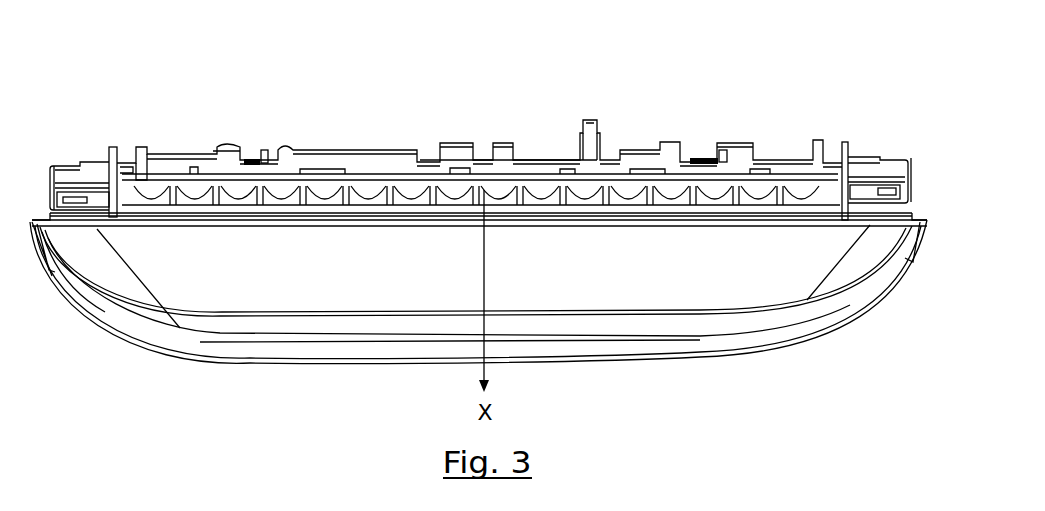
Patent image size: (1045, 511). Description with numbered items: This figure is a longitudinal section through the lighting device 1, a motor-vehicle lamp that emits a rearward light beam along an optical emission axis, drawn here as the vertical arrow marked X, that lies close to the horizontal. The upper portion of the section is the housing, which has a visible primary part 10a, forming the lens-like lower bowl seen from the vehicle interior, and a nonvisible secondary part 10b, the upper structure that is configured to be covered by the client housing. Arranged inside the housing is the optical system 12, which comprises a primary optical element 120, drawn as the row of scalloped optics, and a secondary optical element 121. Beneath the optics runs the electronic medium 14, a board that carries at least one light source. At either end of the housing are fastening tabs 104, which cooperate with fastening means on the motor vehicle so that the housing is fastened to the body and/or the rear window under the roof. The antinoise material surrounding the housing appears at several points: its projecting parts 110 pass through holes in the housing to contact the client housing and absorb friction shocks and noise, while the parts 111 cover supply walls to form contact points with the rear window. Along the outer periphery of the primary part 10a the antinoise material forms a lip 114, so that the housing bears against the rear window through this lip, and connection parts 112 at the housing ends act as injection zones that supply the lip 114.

The lighting device 1 is at (196, 110).
The primary part 10a is at (780, 287).
The secondary part 10b is at (648, 163).
The optical system 12 is at (420, 50).
The primary optical element 120 is at (456, 188).
The secondary optical element 121 is at (549, 208).
The electronic medium 14 is at (309, 175).
The fastening tabs 104 is at (88, 174).
The projecting part 110 is at (247, 163).
The antinoise material part covering a supply wall 111 is at (267, 162).
The connection parts 112 is at (102, 218).
The lip 114 is at (292, 343).